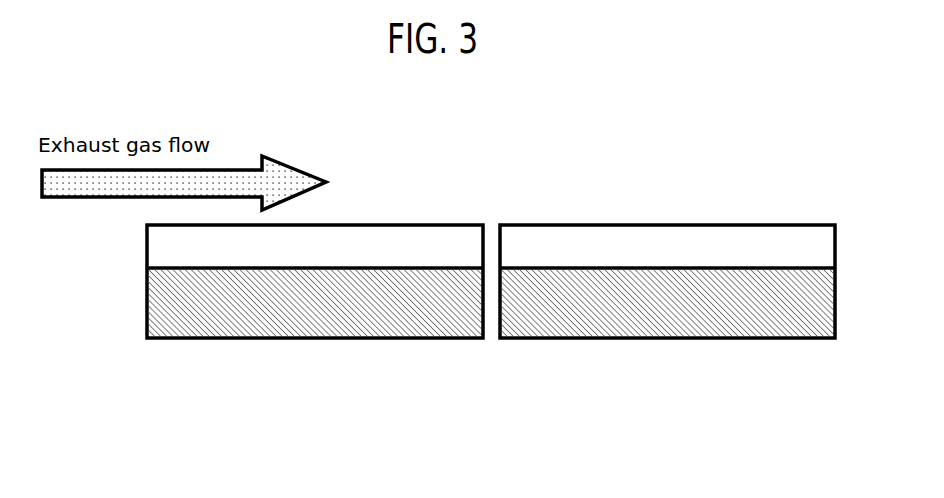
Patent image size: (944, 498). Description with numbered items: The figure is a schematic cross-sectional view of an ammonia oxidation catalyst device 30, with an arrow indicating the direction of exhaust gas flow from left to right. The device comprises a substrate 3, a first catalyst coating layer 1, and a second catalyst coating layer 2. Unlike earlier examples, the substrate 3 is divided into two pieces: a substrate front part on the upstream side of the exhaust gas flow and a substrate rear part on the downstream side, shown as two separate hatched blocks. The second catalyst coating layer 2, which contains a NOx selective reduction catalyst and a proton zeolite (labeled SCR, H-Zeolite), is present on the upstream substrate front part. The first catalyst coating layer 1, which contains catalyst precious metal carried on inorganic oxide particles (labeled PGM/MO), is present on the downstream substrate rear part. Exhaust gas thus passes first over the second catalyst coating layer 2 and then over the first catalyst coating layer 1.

The ammonia oxidation catalyst device 30 is at (773, 150).
The first catalyst coating layer 1 is at (787, 241).
The second catalyst coating layer 2 is at (413, 242).
The substrate 3 is at (516, 371).